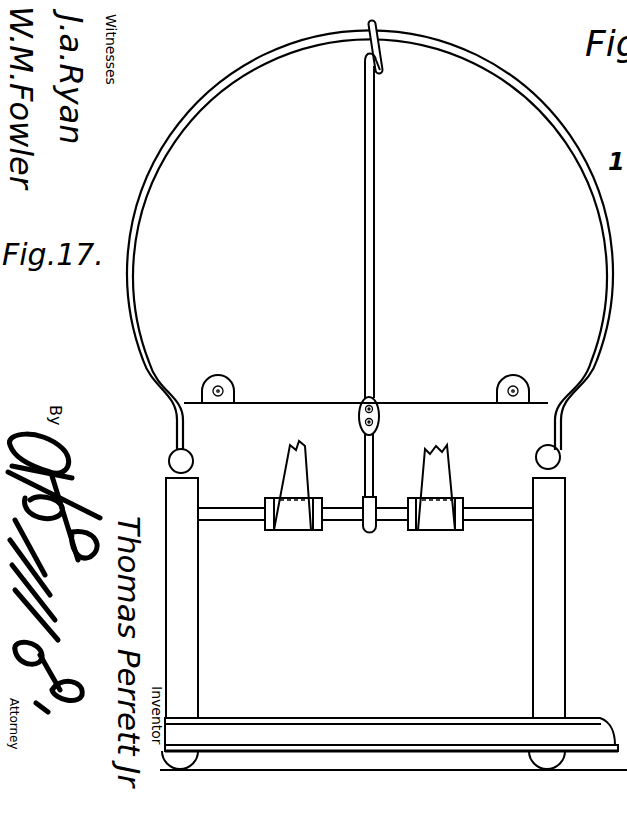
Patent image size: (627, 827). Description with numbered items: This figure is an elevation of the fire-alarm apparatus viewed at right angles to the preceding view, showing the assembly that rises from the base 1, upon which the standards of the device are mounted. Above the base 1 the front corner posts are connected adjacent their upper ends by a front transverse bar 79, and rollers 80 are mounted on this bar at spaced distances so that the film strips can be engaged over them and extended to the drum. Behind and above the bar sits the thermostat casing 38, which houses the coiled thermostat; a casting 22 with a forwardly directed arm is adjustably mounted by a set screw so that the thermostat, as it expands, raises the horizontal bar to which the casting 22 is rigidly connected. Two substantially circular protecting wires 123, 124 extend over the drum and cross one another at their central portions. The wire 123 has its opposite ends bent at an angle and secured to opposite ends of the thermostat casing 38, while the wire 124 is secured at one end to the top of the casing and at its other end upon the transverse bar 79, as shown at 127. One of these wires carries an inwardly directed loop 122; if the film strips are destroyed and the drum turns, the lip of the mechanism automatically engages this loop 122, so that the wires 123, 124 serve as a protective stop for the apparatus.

The base 1 is at (430, 714).
The casting 22 is at (293, 456).
The thermostat casing 38 is at (412, 408).
The front transverse bar 79 is at (504, 498).
The rollers 80 is at (268, 531).
The inwardly directed loop 122 is at (380, 73).
The protecting wire 123 is at (234, 78).
The protecting wire 124 is at (375, 210).
The securing point of wire on transverse bar 127 is at (364, 535).